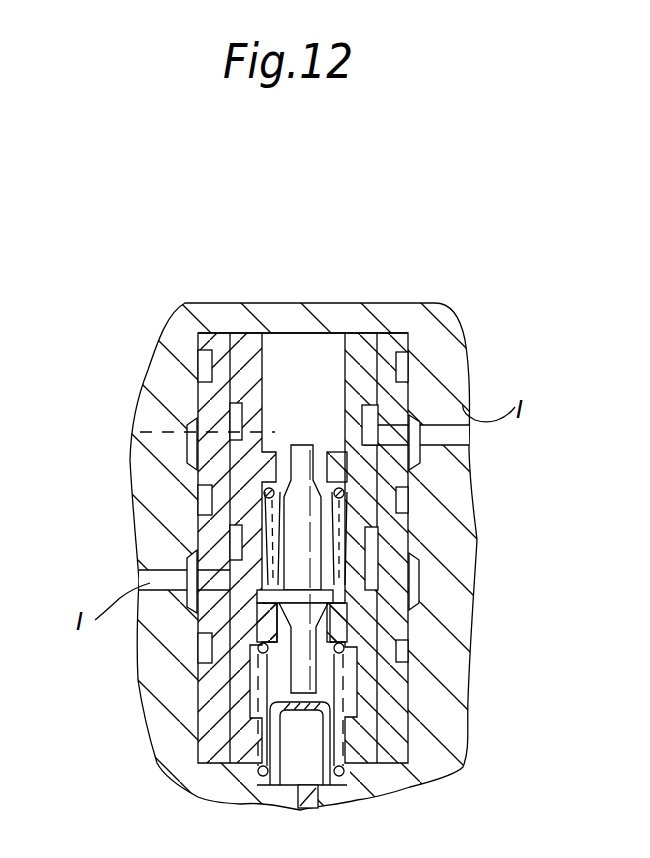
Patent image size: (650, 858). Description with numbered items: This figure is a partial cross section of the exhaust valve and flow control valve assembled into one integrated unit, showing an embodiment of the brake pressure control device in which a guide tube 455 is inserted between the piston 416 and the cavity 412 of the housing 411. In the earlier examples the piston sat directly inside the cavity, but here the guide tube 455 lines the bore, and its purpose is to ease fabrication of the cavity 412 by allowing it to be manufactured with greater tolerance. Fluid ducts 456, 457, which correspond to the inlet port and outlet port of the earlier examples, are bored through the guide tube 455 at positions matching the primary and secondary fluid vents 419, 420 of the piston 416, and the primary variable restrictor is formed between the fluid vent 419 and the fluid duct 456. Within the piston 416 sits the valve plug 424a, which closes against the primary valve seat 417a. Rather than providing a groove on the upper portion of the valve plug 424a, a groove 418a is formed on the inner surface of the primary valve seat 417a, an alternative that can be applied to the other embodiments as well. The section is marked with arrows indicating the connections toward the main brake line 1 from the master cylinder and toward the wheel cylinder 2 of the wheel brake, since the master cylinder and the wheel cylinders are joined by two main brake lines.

The housing 411 is at (452, 736).
The cavity 412 is at (293, 325).
The piston 416 is at (365, 340).
The primary valve seat 417a is at (331, 448).
The primary fluid vent 419 is at (405, 400).
The secondary fluid vent 420 is at (250, 547).
The valve plug 424a is at (312, 523).
The guide tube 455 is at (218, 345).
The fluid duct 456 is at (452, 432).
The fluid duct 457 is at (243, 591).
The groove 418a is at (140, 432).
The main brake line 1 is at (478, 443).
The wheel cylinder 2 is at (123, 580).